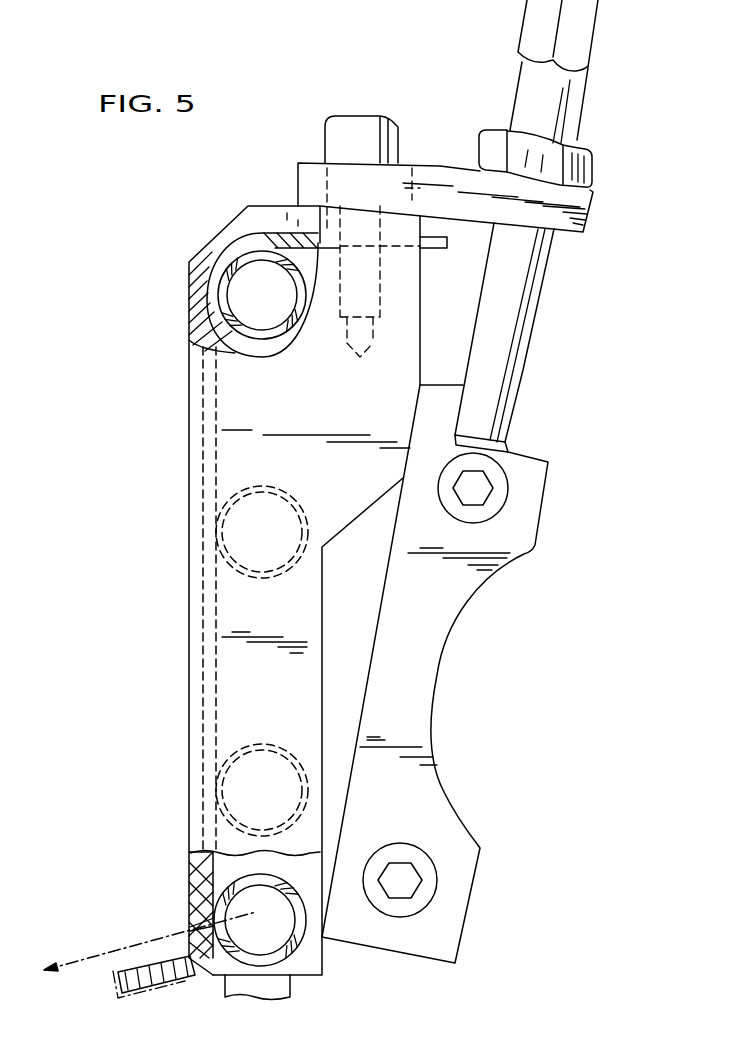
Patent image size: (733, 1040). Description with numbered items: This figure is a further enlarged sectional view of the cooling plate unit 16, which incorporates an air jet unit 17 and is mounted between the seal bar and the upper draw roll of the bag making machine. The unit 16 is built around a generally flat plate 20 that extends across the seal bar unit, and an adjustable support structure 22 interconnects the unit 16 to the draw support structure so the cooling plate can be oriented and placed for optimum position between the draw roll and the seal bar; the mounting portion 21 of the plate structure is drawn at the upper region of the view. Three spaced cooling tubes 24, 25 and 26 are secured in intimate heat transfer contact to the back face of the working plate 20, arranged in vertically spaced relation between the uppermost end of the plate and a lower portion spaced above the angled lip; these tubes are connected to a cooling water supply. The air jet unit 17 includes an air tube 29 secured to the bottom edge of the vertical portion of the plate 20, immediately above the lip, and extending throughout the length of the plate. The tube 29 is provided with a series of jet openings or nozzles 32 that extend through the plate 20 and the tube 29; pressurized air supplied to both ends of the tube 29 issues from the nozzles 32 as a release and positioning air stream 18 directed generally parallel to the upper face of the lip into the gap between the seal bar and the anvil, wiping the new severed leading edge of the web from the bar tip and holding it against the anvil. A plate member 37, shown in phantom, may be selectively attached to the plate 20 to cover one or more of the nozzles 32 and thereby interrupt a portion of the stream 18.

The cooling plate unit 16 is at (329, 107).
The air jet unit 17 is at (302, 949).
The release and positioning air stream 18 is at (127, 943).
The plate 20 is at (220, 336).
The mounting plate 21 is at (268, 218).
The adjustable support structure 22 is at (518, 292).
The cooling tube 24 is at (277, 335).
The cooling tube 25 is at (288, 491).
The cooling tube 26 is at (254, 744).
The air tube 29 is at (190, 866).
The jet openings or nozzles 32 is at (195, 923).
The plate member 37 is at (150, 990).